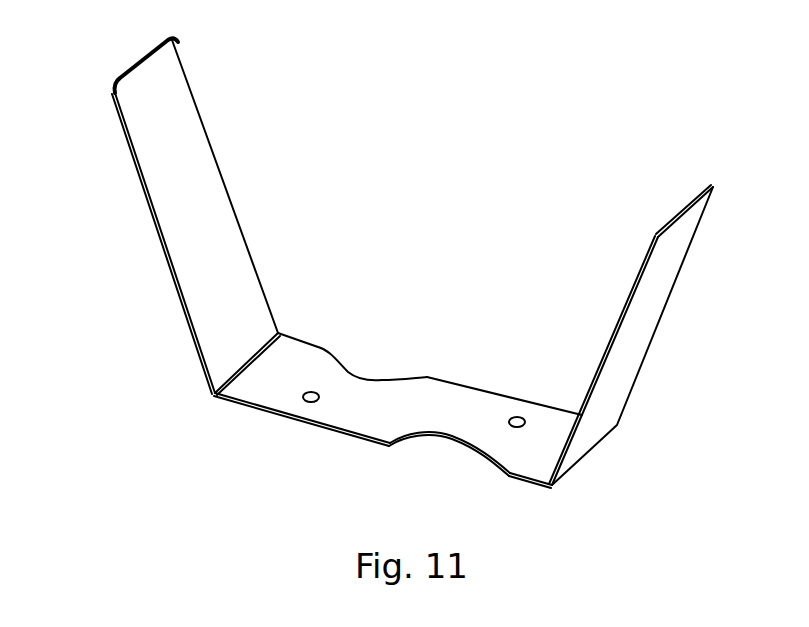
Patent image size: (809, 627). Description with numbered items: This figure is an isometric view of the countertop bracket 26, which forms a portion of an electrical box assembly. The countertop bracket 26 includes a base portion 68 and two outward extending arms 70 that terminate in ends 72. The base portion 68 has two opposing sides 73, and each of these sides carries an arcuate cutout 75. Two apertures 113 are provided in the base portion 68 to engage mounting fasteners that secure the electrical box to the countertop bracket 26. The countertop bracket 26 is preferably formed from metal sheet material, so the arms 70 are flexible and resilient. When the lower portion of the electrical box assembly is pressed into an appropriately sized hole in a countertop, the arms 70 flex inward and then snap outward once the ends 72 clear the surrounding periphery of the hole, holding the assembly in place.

The countertop bracket 26 is at (590, 121).
The base portion 68 is at (458, 419).
The outward extending arms 70 is at (207, 202).
The ends 72 is at (142, 62).
The opposing sides 73 is at (302, 337).
The arcuate cutouts 75 is at (371, 378).
The apertures 113 is at (517, 416).